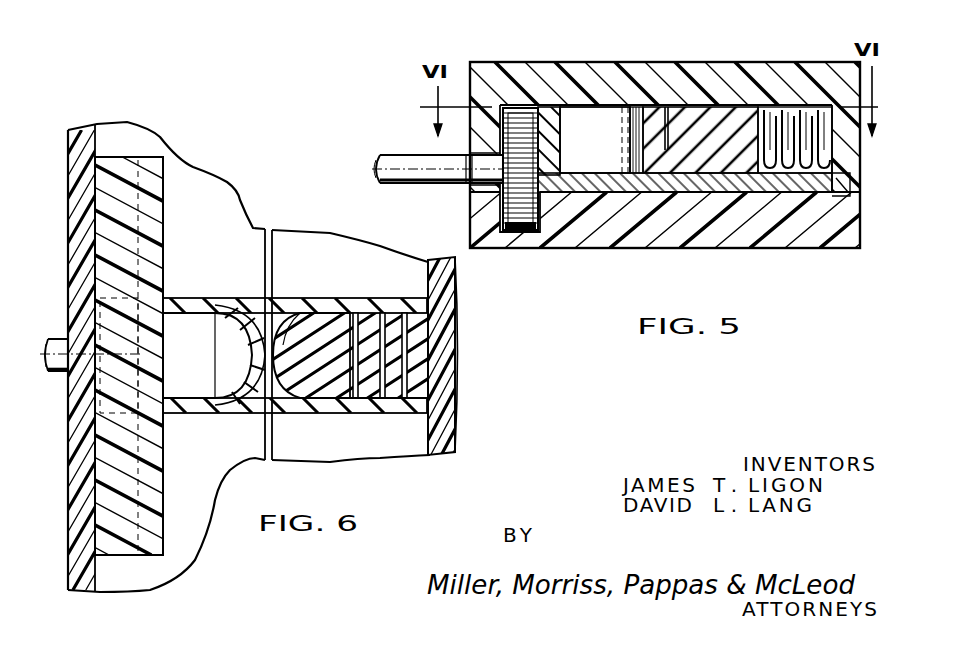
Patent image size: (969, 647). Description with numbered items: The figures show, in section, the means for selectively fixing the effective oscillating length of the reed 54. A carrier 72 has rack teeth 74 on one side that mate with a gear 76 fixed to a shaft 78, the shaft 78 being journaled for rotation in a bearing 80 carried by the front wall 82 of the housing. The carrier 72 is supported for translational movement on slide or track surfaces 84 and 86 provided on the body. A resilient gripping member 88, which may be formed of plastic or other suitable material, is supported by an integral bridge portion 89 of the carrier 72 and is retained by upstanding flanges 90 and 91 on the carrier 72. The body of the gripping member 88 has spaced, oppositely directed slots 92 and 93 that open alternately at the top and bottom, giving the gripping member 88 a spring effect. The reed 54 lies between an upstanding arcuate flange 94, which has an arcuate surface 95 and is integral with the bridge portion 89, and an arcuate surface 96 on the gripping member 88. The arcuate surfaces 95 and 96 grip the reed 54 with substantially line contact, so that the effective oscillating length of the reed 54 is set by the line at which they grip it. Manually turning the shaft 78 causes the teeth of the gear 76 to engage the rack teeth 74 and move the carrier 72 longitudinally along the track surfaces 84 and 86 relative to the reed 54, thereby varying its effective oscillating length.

In FIG. 5, the reed 54 is at (668, 112).
In FIG. 6, the reed 54 is at (273, 445).
In FIG. 5, the carrier 72 is at (738, 188).
In FIG. 5, the rack teeth 74 is at (478, 128).
In FIG. 5, the gear 76 is at (522, 232).
In FIG. 6, the gear 76 is at (130, 300).
In FIG. 5, the shaft 78 is at (422, 183).
In FIG. 6, the shaft 78 is at (57, 340).
In FIG. 5, the bearing 80 is at (466, 178).
In FIG. 5, the front wall 82 is at (478, 212).
In FIG. 5, the slide or track surface 84 is at (590, 110).
In FIG. 5, the slide or track surface 86 is at (580, 178).
In FIG. 5, the resilient gripping member 88 is at (700, 125).
In FIG. 6, the resilient gripping member 88 is at (310, 318).
In FIG. 5, the bridge portion 89 is at (648, 195).
In FIG. 6, the upstanding flange 90 is at (351, 305).
In FIG. 5, the upstanding flange 91 is at (846, 158).
In FIG. 6, the upstanding flange 91 is at (340, 414).
In FIG. 5, the slot 92 is at (790, 108).
In FIG. 6, the slot 92 is at (390, 312).
In FIG. 5, the slot 93 is at (806, 184).
In FIG. 5, the arcuate flange 94 is at (638, 108).
In FIG. 6, the arcuate flange 94 is at (222, 305).
In FIG. 6, the arcuate surface 95 is at (255, 312).
In FIG. 6, the arcuate surface 96 is at (285, 318).